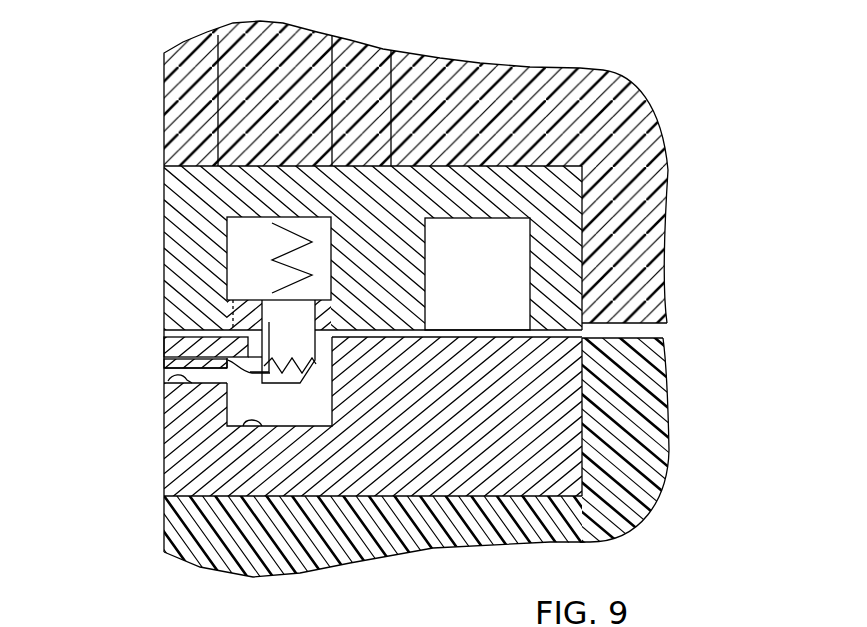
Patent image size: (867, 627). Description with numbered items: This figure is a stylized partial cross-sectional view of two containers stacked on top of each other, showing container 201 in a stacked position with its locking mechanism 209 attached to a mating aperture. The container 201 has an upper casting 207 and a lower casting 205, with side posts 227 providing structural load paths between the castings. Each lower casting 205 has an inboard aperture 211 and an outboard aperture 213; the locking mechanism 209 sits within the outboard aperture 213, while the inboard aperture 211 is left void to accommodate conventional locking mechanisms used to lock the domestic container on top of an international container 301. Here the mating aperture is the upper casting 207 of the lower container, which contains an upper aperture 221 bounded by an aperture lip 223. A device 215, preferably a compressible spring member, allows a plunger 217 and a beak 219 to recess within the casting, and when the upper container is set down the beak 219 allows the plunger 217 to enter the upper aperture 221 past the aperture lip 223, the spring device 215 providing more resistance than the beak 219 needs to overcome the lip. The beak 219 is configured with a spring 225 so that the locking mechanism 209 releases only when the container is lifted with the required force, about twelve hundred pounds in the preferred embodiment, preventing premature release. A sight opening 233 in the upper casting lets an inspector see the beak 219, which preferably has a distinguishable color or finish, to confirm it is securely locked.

The container 201 is at (653, 124).
The lower casting 205 is at (583, 218).
The upper casting 207 is at (164, 450).
The locking mechanism 209 is at (293, 410).
The inboard aperture 211 is at (530, 282).
The outboard aperture 213 is at (227, 250).
The device 215 is at (277, 243).
The plunger 217 is at (302, 377).
The beak 219 is at (263, 380).
The upper aperture 221 is at (242, 424).
The aperture lip 223 is at (228, 360).
The spring 225 is at (287, 373).
The side post 227 is at (164, 92).
The sight opening 233 is at (168, 381).
The international container 301 is at (625, 532).